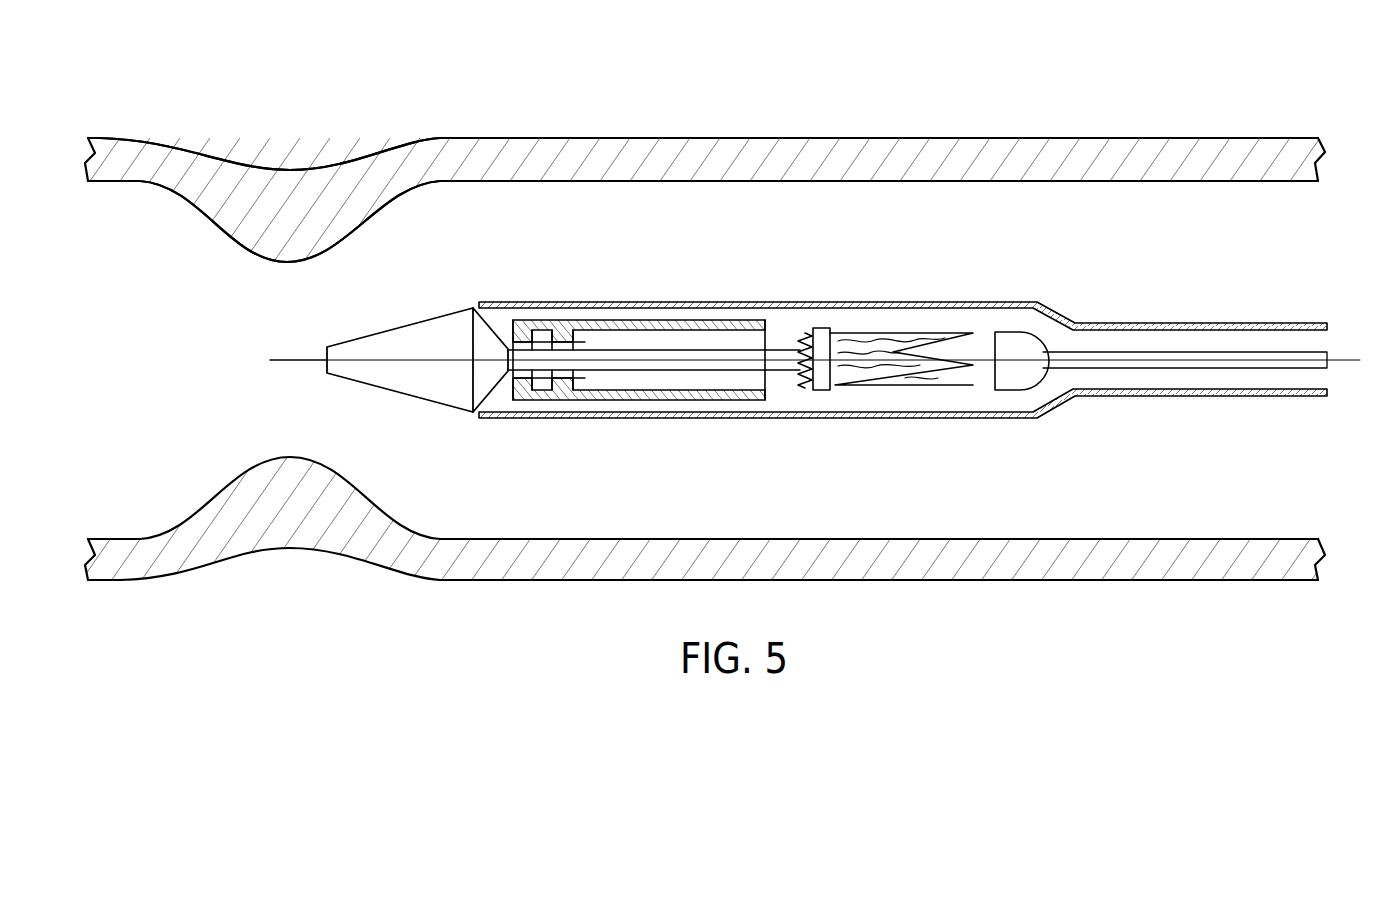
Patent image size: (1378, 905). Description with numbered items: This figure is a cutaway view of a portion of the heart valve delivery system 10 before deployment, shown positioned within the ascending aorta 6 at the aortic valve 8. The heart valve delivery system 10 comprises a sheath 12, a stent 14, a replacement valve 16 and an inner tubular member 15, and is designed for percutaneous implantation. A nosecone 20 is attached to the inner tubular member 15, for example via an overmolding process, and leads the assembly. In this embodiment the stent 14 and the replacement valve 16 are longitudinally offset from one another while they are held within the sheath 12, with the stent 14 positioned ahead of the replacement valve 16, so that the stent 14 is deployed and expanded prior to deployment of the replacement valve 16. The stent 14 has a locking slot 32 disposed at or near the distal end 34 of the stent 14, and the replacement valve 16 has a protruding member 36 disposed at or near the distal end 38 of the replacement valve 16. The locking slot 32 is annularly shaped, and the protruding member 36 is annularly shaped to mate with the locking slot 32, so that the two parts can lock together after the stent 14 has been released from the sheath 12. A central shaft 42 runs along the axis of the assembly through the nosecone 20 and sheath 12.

The ascending aorta 6 is at (1015, 137).
The aortic valve 8 is at (307, 200).
The heart valve delivery system 10 is at (1140, 105).
The sheath 12 is at (1190, 323).
The stent 14 is at (630, 395).
The inner tubular member 15 is at (1262, 352).
The replacement valve 16 is at (873, 333).
The nosecone 20 is at (430, 319).
The locking slot 32 is at (543, 332).
The distal end of the stent 34 is at (513, 394).
The protruding member 36 is at (822, 328).
The distal end of the replacement valve 38 is at (808, 392).
The shaft 42 is at (295, 358).